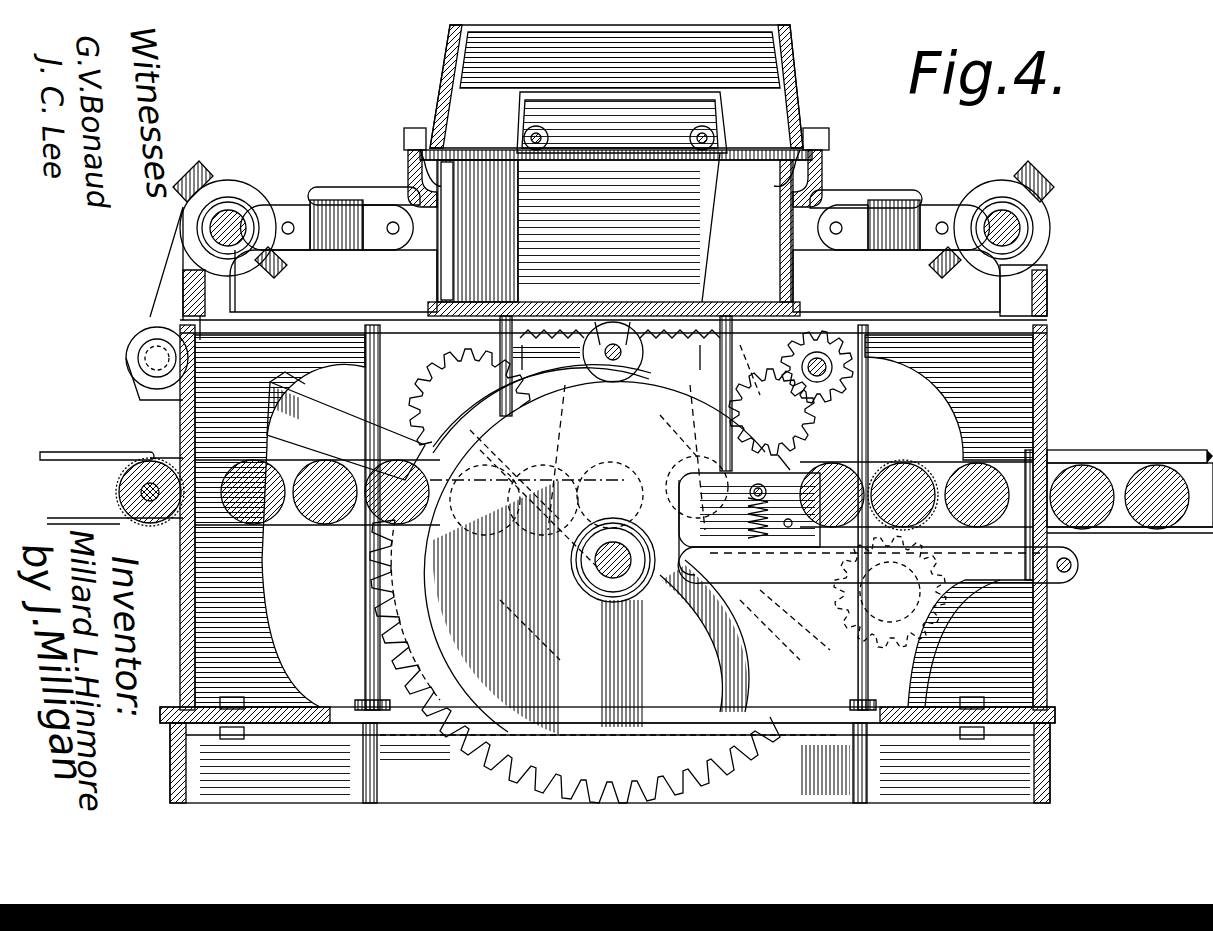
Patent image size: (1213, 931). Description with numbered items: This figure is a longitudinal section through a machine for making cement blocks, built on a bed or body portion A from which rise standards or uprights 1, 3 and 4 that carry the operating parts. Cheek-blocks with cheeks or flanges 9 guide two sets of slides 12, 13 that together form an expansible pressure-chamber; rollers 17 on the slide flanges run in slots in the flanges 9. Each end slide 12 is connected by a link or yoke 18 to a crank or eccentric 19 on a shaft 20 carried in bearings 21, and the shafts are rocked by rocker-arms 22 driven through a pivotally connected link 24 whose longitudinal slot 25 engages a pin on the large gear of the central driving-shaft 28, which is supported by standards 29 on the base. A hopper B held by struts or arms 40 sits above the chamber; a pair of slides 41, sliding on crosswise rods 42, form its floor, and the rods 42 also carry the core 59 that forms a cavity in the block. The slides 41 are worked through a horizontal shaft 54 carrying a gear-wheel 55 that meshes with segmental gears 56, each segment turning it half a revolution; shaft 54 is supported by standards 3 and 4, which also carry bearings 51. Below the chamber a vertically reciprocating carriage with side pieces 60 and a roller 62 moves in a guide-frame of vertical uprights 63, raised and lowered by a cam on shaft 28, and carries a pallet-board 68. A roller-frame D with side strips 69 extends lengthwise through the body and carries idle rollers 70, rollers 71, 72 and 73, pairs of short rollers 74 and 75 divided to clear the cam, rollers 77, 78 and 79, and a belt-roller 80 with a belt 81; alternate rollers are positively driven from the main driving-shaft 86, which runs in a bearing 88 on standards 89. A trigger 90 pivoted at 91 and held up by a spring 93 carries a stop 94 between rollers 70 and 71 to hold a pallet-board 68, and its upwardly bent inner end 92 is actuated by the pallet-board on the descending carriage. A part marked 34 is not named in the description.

The hopper B is at (440, 80).
The rods 42 is at (698, 135).
The end slides 12 is at (516, 222).
The rollers 17 is at (782, 231).
The core 59 is at (704, 208).
The slides 41 is at (730, 158).
The pallet-board 68 is at (1090, 457).
The shaft 20 is at (230, 222).
The bearings 21 is at (190, 172).
The side slides 13 is at (250, 262).
The link or yoke 18 is at (313, 205).
The crank or eccentric 19 is at (968, 200).
The struts or arms 40 is at (414, 177).
The cheeks or flanges 9 is at (615, 295).
The rocker-arms 22 is at (172, 300).
The standard or upright 1 is at (197, 427).
The standard or upright 3 is at (1037, 383).
The bed or body portion A is at (1017, 770).
The base rib 34 is at (487, 760).
The belt 81 is at (100, 440).
The roller-frame D is at (1197, 482).
The belt-roller 80 is at (153, 514).
The roller 79 is at (256, 518).
The roller 78 is at (328, 520).
The roller 77 is at (360, 528).
The side strips 69 is at (198, 486).
The roller 73 is at (862, 465).
The roller 72 is at (906, 465).
The roller 71 is at (973, 462).
The idle rollers 70 is at (1163, 522).
The link 24 is at (305, 410).
The bearings 51 is at (428, 384).
The side pieces 60 is at (690, 390).
The roller 62 is at (603, 378).
The vertical uprights 63 is at (510, 398).
The short rollers 75 is at (677, 437).
The longitudinal slots 25 is at (594, 550).
The central driving-shaft 28 is at (607, 598).
The standards 29 is at (688, 670).
The standard or upright 4 is at (380, 643).
The gear-wheel 55 is at (843, 368).
The segmental gears 56 is at (745, 410).
The shaft 54 is at (822, 382).
The short rollers 74 is at (794, 454).
The inner end of trigger 92 is at (749, 524).
The spring 93 is at (777, 517).
The trigger 90 is at (878, 573).
The pivot 91 is at (1075, 563).
The stop 94 is at (1037, 453).
The standards 89 is at (890, 592).
The main driving-shaft 86 is at (970, 643).
The bearing 88 is at (785, 625).